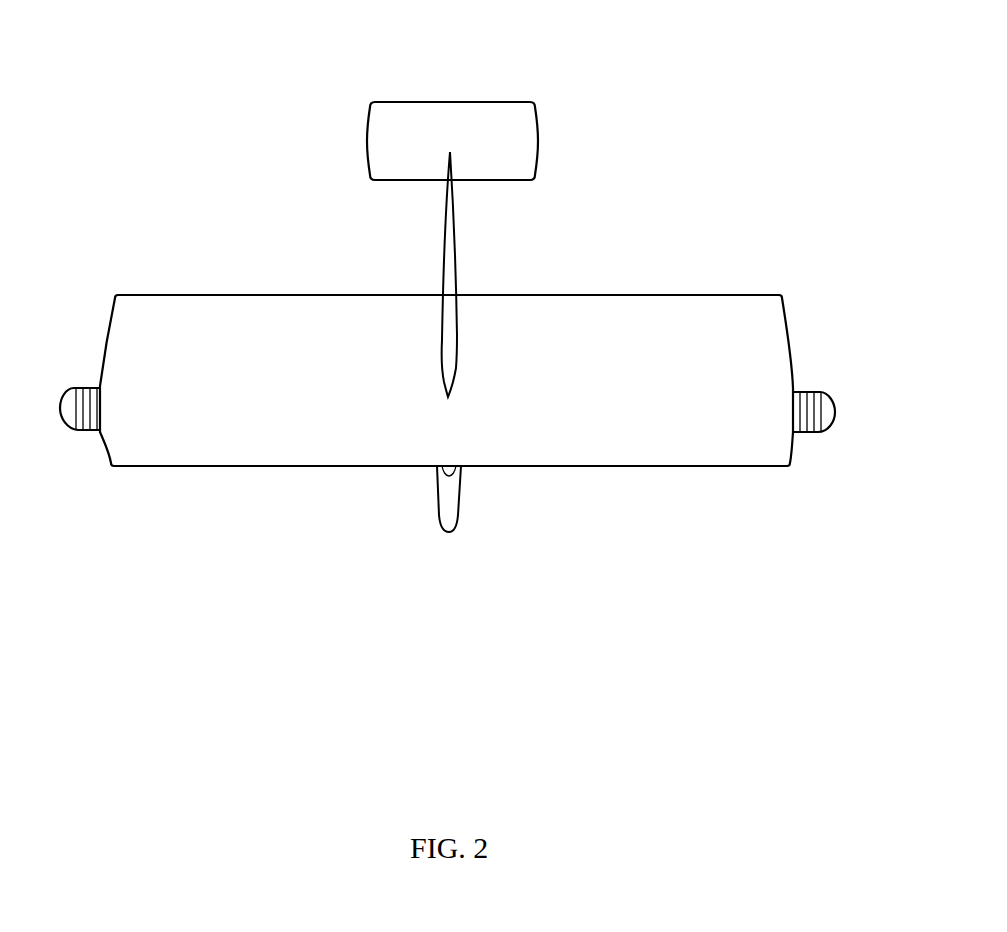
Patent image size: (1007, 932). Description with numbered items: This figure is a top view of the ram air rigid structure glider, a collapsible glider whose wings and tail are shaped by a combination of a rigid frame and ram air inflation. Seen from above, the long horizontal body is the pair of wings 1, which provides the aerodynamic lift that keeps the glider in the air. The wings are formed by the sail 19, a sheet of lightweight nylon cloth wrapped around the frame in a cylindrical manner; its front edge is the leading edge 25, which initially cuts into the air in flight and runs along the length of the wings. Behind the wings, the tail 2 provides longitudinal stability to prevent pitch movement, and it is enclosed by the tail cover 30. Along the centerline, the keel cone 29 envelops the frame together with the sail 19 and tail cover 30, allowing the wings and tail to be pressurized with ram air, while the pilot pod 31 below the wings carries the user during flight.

The pair of wings 1 is at (543, 258).
The tail 2 is at (430, 90).
The sail 19 is at (247, 322).
The leading edge 25 is at (297, 467).
The keel cone 29 is at (448, 262).
The tail cover 30 is at (520, 135).
The pilot pod 31 is at (474, 497).